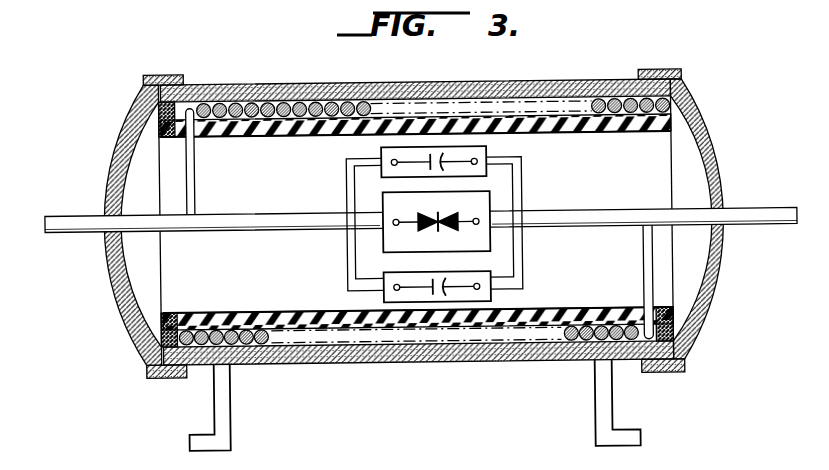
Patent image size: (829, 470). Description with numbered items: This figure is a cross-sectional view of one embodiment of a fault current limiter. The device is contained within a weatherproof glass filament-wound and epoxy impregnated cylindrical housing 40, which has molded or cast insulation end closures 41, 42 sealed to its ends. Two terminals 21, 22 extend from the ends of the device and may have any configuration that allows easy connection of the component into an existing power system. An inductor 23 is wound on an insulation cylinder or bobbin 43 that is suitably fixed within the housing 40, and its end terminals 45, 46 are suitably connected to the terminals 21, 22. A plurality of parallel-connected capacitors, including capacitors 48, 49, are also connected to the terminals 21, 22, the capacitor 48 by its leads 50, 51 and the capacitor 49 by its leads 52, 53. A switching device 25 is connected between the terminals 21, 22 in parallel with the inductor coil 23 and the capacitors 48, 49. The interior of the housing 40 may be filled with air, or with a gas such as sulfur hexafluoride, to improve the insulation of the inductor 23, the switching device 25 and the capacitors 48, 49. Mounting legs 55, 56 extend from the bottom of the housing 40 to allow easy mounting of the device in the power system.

The terminal 21 is at (95, 233).
The terminal 22 is at (757, 228).
The inductor 23 is at (245, 102).
The switching device 25 is at (383, 244).
The cylindrical housing 40 is at (565, 82).
The insulation end closure 41 is at (112, 306).
The insulation end closure 42 is at (713, 324).
The insulation cylinder or bobbin 43 is at (243, 294).
The end terminal 45 is at (196, 183).
The end terminal 46 is at (641, 262).
The capacitor 48 is at (487, 150).
The capacitor 49 is at (490, 298).
The lead 50 is at (347, 182).
The lead 51 is at (522, 193).
The lead 52 is at (383, 261).
The lead 53 is at (523, 257).
The mounting leg 55 is at (233, 428).
The mounting leg 56 is at (592, 418).